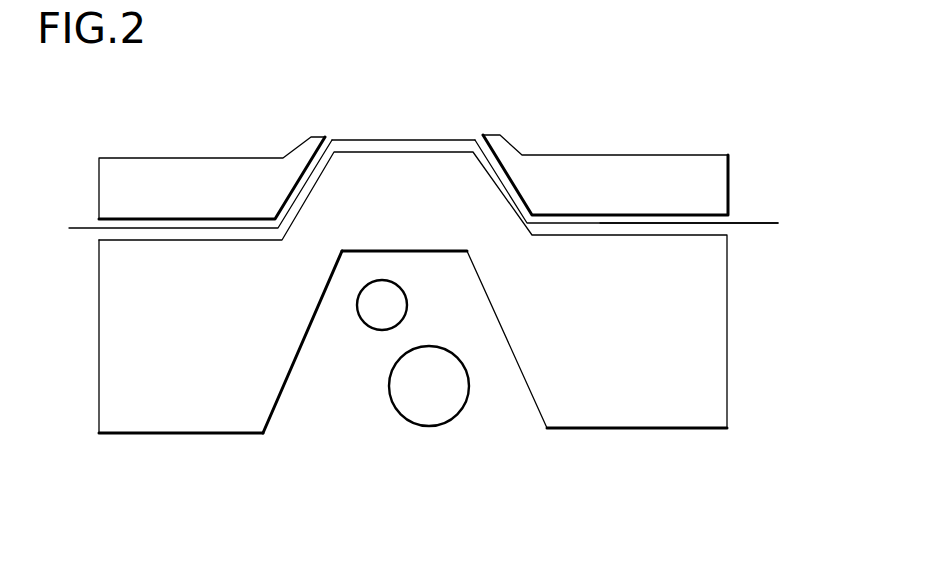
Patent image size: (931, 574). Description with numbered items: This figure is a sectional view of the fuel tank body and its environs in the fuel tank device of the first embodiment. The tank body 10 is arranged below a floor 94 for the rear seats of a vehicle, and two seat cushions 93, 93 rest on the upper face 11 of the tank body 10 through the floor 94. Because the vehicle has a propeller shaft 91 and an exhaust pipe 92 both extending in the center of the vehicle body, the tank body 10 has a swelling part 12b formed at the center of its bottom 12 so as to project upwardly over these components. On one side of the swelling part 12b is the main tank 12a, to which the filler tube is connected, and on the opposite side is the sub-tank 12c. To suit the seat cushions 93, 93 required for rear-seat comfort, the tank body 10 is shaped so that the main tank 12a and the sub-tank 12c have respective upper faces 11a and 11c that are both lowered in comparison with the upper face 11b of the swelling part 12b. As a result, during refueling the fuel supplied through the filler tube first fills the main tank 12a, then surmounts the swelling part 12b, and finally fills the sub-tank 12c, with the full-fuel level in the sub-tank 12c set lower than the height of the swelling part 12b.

The tank body 10 is at (728, 325).
The upper face 11 is at (423, 124).
The upper face of main tank 11a is at (592, 235).
The upper face of swelling part 11b is at (406, 140).
The upper face of sub-tank 11c is at (217, 240).
The bottom 12 is at (403, 405).
The main tank 12a is at (523, 382).
The swelling part 12b is at (462, 252).
The sub-tank 12c is at (227, 434).
The propeller shaft 91 is at (400, 410).
The exhaust pipe 92 is at (357, 316).
The seat cushion 93 is at (199, 157).
The floor 94 is at (770, 222).